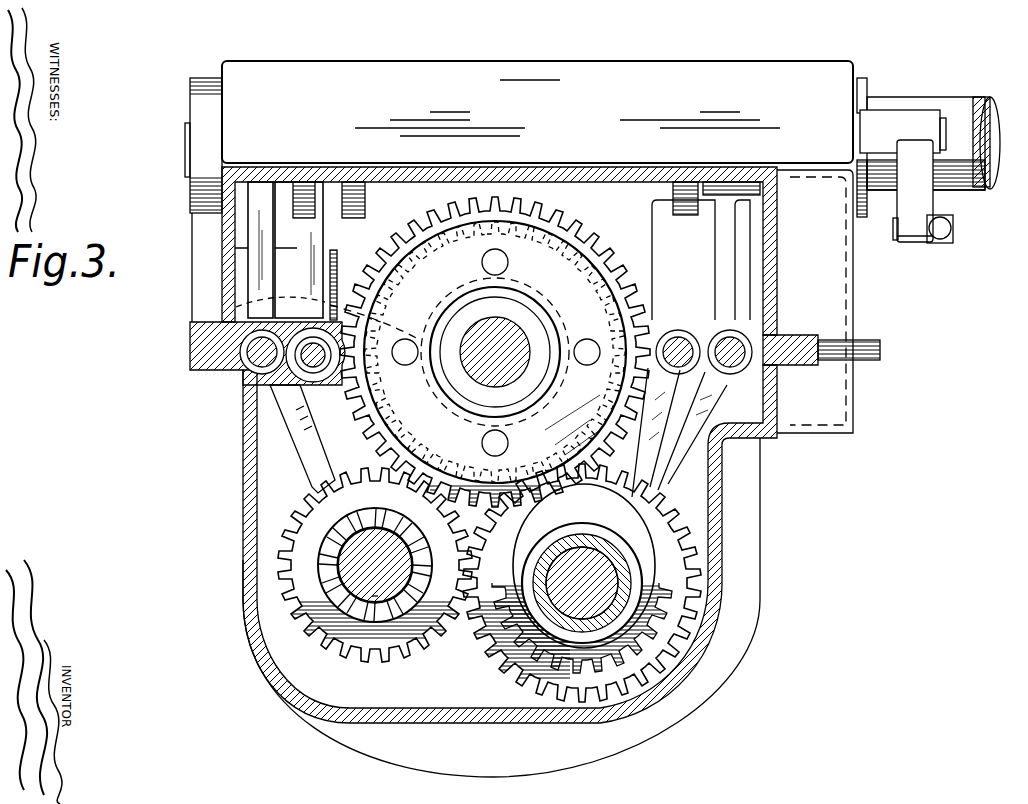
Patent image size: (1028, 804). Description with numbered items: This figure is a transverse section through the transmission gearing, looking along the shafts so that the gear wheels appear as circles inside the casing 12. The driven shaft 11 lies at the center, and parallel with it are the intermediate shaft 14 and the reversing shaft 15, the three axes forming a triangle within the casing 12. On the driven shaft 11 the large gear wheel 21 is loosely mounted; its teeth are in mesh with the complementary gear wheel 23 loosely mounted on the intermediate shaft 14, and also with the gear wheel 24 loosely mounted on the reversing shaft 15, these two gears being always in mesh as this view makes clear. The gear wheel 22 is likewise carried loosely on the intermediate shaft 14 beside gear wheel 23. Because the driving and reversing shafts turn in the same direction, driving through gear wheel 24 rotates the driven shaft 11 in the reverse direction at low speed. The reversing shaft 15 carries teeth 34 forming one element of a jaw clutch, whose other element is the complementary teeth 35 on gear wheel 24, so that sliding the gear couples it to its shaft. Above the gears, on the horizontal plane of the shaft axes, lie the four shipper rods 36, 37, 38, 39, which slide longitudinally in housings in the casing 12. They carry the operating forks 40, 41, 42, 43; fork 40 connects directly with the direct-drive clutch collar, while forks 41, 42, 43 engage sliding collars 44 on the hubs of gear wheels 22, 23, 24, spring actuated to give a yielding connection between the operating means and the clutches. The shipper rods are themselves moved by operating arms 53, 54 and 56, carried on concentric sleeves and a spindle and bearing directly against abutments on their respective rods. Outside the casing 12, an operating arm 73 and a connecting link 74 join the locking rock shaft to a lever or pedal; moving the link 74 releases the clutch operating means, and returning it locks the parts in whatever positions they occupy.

The driven shaft 11 is at (512, 343).
The casing 12 is at (720, 510).
The intermediate shaft 14 is at (600, 585).
The reversing shaft 15 is at (338, 570).
The gear wheel 21 is at (548, 230).
The gear wheel 22 is at (668, 640).
The gear wheel 23 is at (507, 643).
The gear wheel 24 is at (385, 655).
The teeth 34 is at (330, 595).
The complementary teeth 35 is at (345, 508).
The shipper rod 36 is at (318, 372).
The shipper rod 37 is at (745, 362).
The shipper rod 38 is at (677, 343).
The shipper rod 39 is at (255, 368).
The operating fork 40 is at (350, 338).
The operating fork 41 is at (672, 452).
The operating fork 42 is at (650, 448).
The operating fork 43 is at (300, 448).
The sliding collar 44 is at (625, 650).
The operating arm 53 is at (310, 268).
The operating arm 54 is at (740, 268).
The operating arm 56 is at (253, 224).
The operating arm 73 is at (920, 200).
The connecting link 74 is at (941, 240).